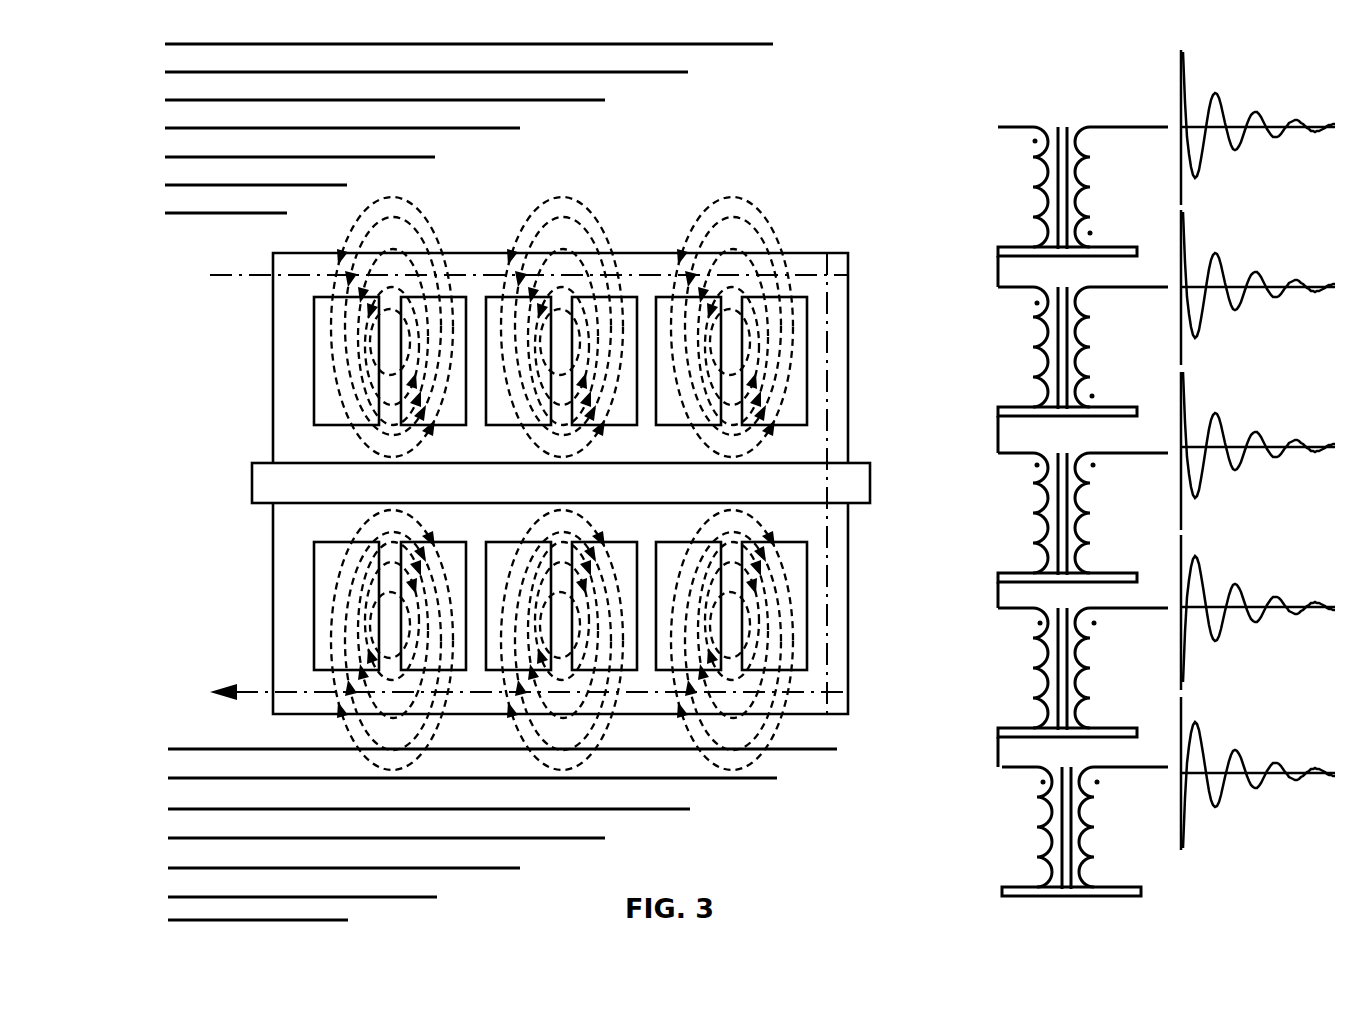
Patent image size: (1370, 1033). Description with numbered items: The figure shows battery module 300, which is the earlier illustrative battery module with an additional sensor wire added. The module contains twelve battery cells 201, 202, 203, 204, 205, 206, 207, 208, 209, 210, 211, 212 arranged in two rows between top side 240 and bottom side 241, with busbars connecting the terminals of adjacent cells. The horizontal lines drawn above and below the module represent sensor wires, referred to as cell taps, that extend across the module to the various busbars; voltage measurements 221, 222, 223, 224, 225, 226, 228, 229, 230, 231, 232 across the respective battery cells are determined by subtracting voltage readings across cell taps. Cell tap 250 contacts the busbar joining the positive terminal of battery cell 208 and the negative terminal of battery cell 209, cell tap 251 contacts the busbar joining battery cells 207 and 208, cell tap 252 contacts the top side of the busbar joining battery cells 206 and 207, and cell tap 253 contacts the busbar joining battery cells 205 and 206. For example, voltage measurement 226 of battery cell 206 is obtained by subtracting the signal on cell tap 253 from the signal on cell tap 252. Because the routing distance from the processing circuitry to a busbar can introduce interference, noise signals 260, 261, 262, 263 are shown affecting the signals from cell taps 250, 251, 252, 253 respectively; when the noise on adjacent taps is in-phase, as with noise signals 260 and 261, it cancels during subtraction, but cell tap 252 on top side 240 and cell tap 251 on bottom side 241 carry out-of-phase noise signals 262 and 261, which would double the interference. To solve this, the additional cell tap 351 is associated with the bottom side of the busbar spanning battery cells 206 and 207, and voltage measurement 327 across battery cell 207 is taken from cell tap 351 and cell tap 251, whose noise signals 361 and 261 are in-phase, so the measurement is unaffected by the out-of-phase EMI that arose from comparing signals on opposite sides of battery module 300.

The battery module 300 is at (702, 32).
The battery cell 201 is at (338, 297).
The battery cell 202 is at (466, 297).
The battery cell 203 is at (488, 297).
The battery cell 204 is at (636, 297).
The battery cell 205 is at (658, 297).
The battery cell 206 is at (806, 297).
The battery cell 207 is at (800, 672).
The battery cell 208 is at (672, 672).
The battery cell 209 is at (628, 531).
The battery cell 210 is at (488, 542).
The battery cell 211 is at (467, 672).
The battery cell 212 is at (330, 672).
The voltage measurement 221 is at (165, 185).
The voltage measurement 222 is at (165, 157).
The voltage measurement 223 is at (165, 128).
The voltage measurement 224 is at (165, 100).
The voltage measurement 225 is at (165, 72).
The voltage measurement 226 is at (165, 44).
The voltage measurement 327 is at (168, 749).
The voltage measurement 228 is at (168, 778).
The voltage measurement 229 is at (168, 809).
The voltage measurement 230 is at (168, 838).
The voltage measurement 231 is at (168, 868).
The voltage measurement 232 is at (168, 897).
The top side 240 is at (273, 383).
The bottom side 241 is at (273, 615).
The cell tap 250 is at (986, 127).
The cell tap 251 is at (986, 287).
The cell tap 351 is at (986, 582).
The cell tap 252 is at (986, 737).
The cell tap 253 is at (986, 896).
The noise signal 260 is at (1218, 93).
The noise signal 261 is at (1218, 253).
The noise signal 361 is at (1218, 413).
The noise signal 262 is at (1237, 587).
The noise signal 263 is at (1237, 752).